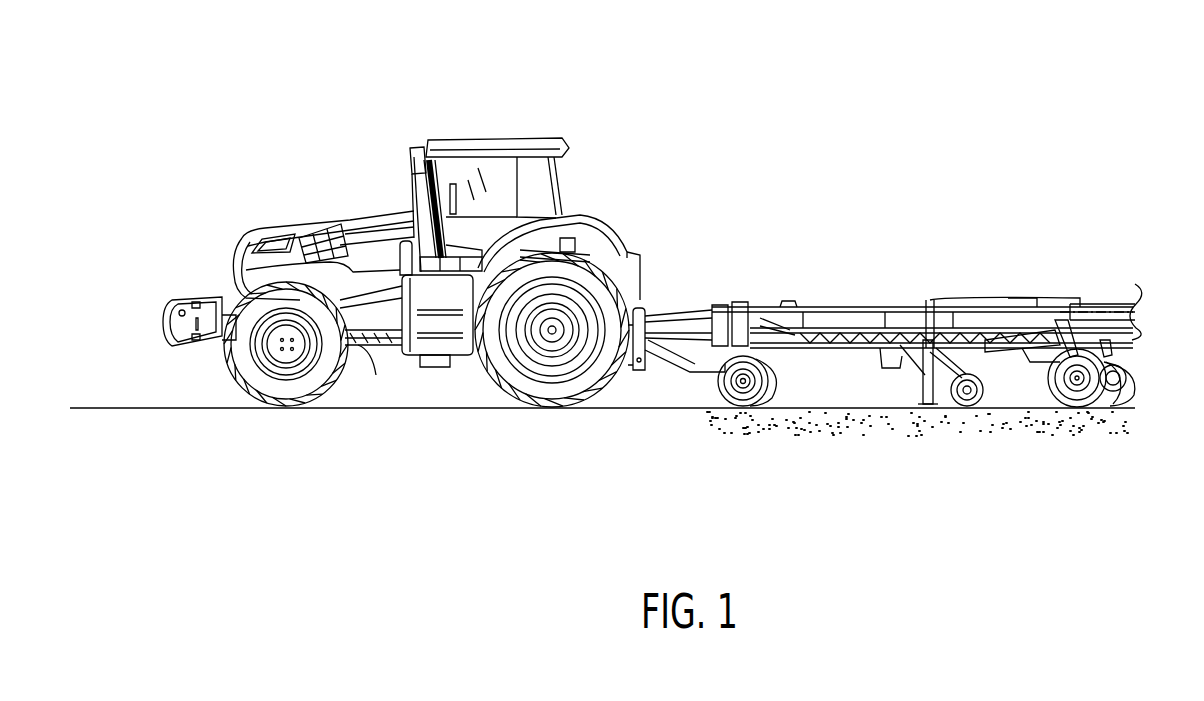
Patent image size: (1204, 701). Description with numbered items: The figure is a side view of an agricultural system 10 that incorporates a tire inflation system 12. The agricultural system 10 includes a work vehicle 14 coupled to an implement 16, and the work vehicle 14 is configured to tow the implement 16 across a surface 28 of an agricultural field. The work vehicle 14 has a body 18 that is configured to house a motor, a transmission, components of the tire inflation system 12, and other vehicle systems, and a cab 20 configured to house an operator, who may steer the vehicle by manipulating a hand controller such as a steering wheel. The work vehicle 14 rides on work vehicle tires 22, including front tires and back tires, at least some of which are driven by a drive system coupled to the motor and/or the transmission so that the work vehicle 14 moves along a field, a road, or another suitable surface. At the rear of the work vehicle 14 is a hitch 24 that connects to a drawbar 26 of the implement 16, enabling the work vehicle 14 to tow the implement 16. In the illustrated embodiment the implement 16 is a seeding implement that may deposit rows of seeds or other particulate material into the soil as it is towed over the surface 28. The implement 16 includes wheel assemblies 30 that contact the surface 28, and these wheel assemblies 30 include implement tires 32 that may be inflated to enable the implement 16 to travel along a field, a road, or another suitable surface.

The agricultural system 10 is at (855, 58).
The tire inflation system 12 is at (688, 216).
The work vehicle 14 is at (360, 162).
The implement 16 is at (854, 270).
The body 18 is at (376, 362).
The cab 20 is at (500, 148).
The work vehicle tires 22 is at (283, 385).
The hitch 24 is at (632, 366).
The drawbar 26 is at (655, 366).
The surface 28 is at (373, 409).
The wheel assemblies 30 is at (1032, 376).
The implement tires 32 is at (782, 386).